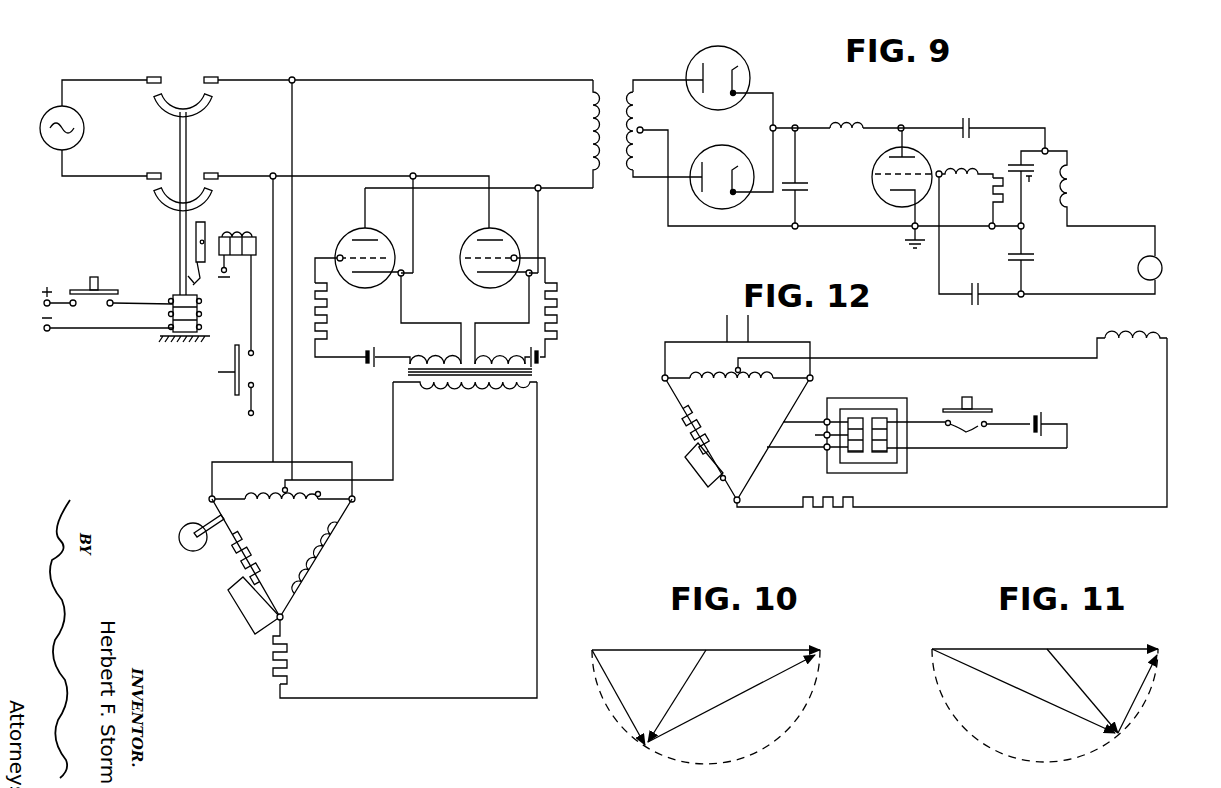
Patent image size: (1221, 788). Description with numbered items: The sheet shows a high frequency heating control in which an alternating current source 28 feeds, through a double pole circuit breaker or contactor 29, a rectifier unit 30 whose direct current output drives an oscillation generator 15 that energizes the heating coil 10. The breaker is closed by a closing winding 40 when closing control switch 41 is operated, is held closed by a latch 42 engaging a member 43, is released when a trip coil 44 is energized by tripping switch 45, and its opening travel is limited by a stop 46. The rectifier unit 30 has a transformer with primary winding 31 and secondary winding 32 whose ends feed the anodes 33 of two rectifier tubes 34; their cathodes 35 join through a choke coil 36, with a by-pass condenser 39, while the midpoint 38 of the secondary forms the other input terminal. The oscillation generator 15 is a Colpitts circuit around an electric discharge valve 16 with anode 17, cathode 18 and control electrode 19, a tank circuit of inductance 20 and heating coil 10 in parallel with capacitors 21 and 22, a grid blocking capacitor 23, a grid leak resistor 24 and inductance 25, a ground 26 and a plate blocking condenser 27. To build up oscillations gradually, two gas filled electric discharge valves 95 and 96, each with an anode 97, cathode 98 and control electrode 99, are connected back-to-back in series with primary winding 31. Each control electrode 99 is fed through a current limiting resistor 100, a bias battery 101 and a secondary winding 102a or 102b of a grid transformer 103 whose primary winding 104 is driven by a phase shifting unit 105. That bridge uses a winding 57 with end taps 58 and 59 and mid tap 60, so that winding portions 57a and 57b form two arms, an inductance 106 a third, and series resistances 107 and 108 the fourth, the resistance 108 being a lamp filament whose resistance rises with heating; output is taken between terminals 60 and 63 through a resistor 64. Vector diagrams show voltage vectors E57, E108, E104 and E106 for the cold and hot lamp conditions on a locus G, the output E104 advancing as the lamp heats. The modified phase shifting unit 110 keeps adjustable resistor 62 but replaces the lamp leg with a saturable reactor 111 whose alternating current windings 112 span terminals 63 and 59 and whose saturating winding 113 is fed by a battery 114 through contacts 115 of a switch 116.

In FIG. 9, the alternating current source 28 is at (88, 128).
In FIG. 9, the circuit breaker or contactor 29 is at (170, 100).
In FIG. 9, the latch 42 is at (205, 245).
In FIG. 9, the member 43 is at (184, 284).
In FIG. 9, the trip coil 44 is at (230, 238).
In FIG. 9, the tripping or circuit breaker opening switch 45 is at (232, 380).
In FIG. 9, the closing control switch 41 is at (98, 286).
In FIG. 9, the circuit breaker closing winding 40 is at (200, 306).
In FIG. 9, the stop 46 is at (160, 338).
In FIG. 9, the electric discharge valve 95 is at (346, 236).
In FIG. 9, the electric discharge valve 96 is at (501, 240).
In FIG. 9, the anode 97 is at (368, 230).
In FIG. 9, the control electrode 99 is at (386, 244).
In FIG. 9, the cathode 98 is at (362, 282).
In FIG. 9, the current limiting resistor 100 is at (324, 320).
In FIG. 9, the bias battery 101 is at (368, 363).
In FIG. 9, the secondary winding 102a is at (436, 360).
In FIG. 9, the secondary winding 102b is at (502, 345).
In FIG. 9, the grid transformer 103 is at (538, 376).
In FIG. 9, the primary winding 104 is at (482, 392).
In FIG. 12, the primary winding 104 is at (1126, 344).
In FIG. 9, the end tap 59 is at (210, 498).
In FIG. 12, the end tap 59 is at (663, 378).
In FIG. 9, the end tap 58 is at (356, 500).
In FIG. 12, the end tap 58 is at (812, 378).
In FIG. 9, the winding 57 is at (244, 491).
In FIG. 12, the winding 57 is at (701, 370).
In FIG. 9, the winding portion 57a is at (264, 490).
In FIG. 12, the winding portion 57a is at (708, 370).
In FIG. 9, the winding portion 57b is at (318, 492).
In FIG. 12, the winding portion 57b is at (777, 405).
In FIG. 9, the mid tap 60 is at (285, 490).
In FIG. 12, the mid tap 60 is at (740, 366).
In FIG. 9, the phase shifting unit 105 is at (300, 541).
In FIG. 9, the manually controllable resistance 107 is at (243, 580).
In FIG. 9, the resistance 108 is at (192, 526).
In FIG. 9, the inductance 106 is at (332, 566).
In FIG. 9, the junction point or terminal 63 is at (284, 619).
In FIG. 12, the junction point or terminal 63 is at (734, 503).
In FIG. 9, the resistor 64 is at (287, 662).
In FIG. 12, the resistor 64 is at (824, 496).
In FIG. 9, the primary winding 31 is at (586, 118).
In FIG. 9, the secondary winding 32 is at (624, 92).
In FIG. 9, the rectifier unit 30 is at (684, 108).
In FIG. 9, the midpoint 38 is at (658, 130).
In FIG. 9, the rectifier tube 34 is at (724, 58).
In FIG. 9, the anode 33 is at (690, 68).
In FIG. 9, the cathode 35 is at (738, 68).
In FIG. 9, the choke coil 36 is at (839, 122).
In FIG. 9, the by-pass condenser 39 is at (802, 192).
In FIG. 9, the plate blocking condenser 27 is at (971, 120).
In FIG. 9, the electric discharge valve 16 is at (874, 168).
In FIG. 9, the anode or plate 17 is at (908, 150).
In FIG. 9, the control electrode or grid 19 is at (876, 176).
In FIG. 9, the cathode 18 is at (895, 192).
In FIG. 9, the ground 26 is at (902, 243).
In FIG. 9, the inductance 25 is at (964, 170).
In FIG. 9, the oscillation generator 15 is at (1007, 160).
In FIG. 9, the resistor 24 is at (989, 198).
In FIG. 9, the grid blocking capacitor 23 is at (974, 286).
In FIG. 9, the capacitor 21 is at (1030, 185).
In FIG. 9, the capacitor 22 is at (1034, 258).
In FIG. 9, the inductance 20 is at (1072, 190).
In FIG. 9, the heating coil 10 is at (1138, 270).
In FIG. 12, the phase shifting unit 110 is at (758, 419).
In FIG. 12, the adjustable resistor 62 is at (694, 442).
In FIG. 12, the saturable reactor 111 is at (882, 418).
In FIG. 12, the alternating current windings 112 is at (900, 437).
In FIG. 12, the saturating winding 113 is at (927, 381).
In FIG. 12, the contacts 115 is at (976, 432).
In FIG. 12, the switch 116 is at (977, 407).
In FIG. 12, the battery 114 is at (1040, 413).
In FIG. 10, the voltage vector E57 is at (714, 650).
In FIG. 11, the voltage vector E57 is at (1111, 648).
In FIG. 10, the voltage vector E108 is at (622, 697).
In FIG. 11, the voltage vector E108 is at (1036, 680).
In FIG. 10, the voltage vector E104 is at (682, 692).
In FIG. 11, the voltage vector E104 is at (1080, 690).
In FIG. 10, the voltage vector E106 is at (752, 692).
In FIG. 11, the voltage vector E106 is at (1142, 690).
In FIG. 10, the locus circle G is at (795, 730).
In FIG. 11, the locus circle G is at (1106, 760).